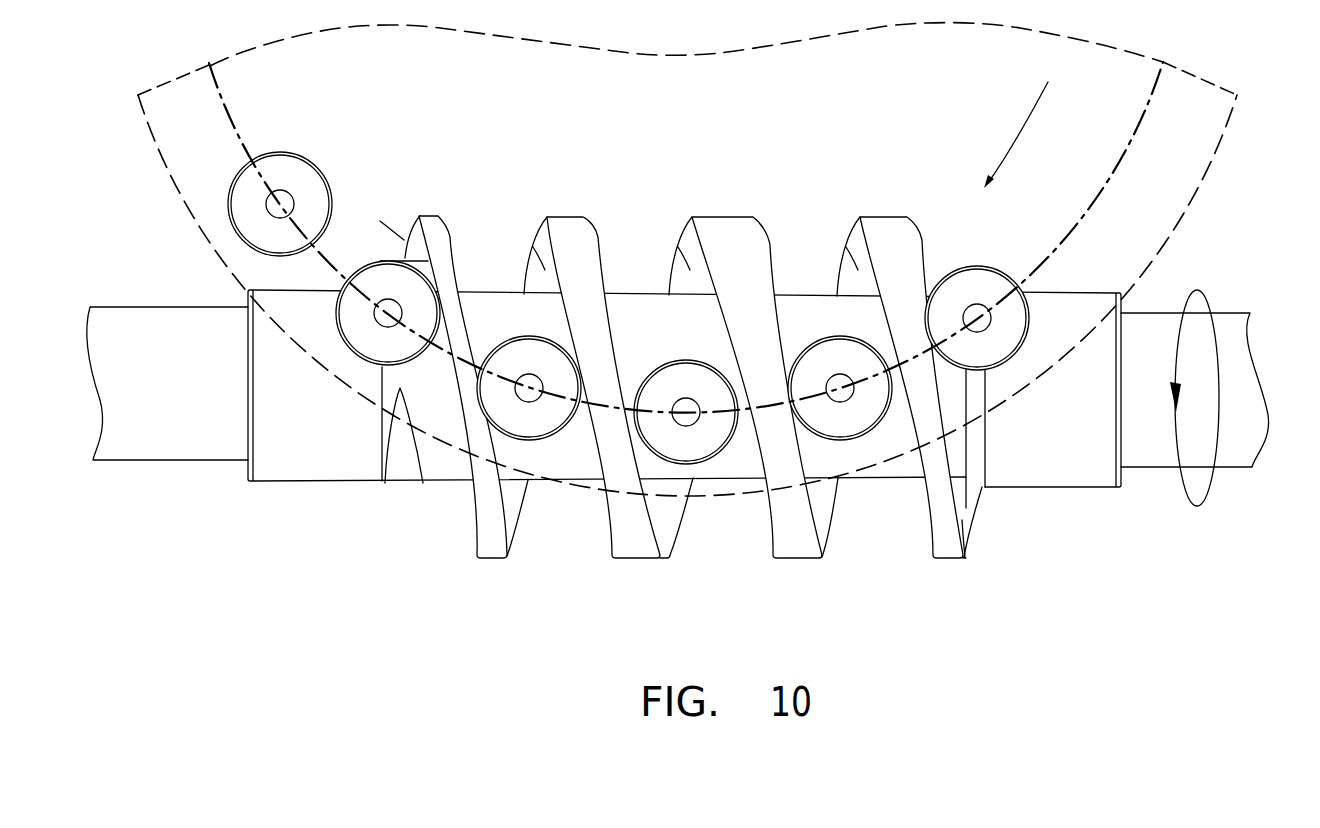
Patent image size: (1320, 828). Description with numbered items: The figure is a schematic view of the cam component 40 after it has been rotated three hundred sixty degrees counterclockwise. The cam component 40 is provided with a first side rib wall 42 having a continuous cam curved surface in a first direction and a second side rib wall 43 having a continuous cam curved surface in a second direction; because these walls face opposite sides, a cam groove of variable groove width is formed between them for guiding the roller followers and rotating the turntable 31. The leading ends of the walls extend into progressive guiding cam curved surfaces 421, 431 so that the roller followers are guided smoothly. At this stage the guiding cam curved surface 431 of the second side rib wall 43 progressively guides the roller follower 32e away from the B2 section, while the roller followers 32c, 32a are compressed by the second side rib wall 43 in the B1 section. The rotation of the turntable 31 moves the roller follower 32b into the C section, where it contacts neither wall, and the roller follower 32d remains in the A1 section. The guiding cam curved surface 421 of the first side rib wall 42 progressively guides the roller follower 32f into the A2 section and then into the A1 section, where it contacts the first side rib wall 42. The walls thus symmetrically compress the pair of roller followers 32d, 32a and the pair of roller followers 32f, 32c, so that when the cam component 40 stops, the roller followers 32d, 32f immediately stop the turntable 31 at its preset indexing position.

The turntable 31 is at (1190, 204).
The roller follower 32a is at (543, 442).
The roller follower 32b is at (706, 465).
The roller follower 32c is at (343, 342).
The roller follower 32d is at (876, 440).
The roller follower 32e is at (220, 223).
The roller follower 32f is at (1014, 368).
The cam component 40 is at (218, 475).
The first side rib wall 42 is at (455, 240).
The progressive guiding cam curved surface 421 is at (963, 523).
The second side rib wall 43 is at (533, 247).
The progressive guiding cam curved surface 431 is at (418, 238).